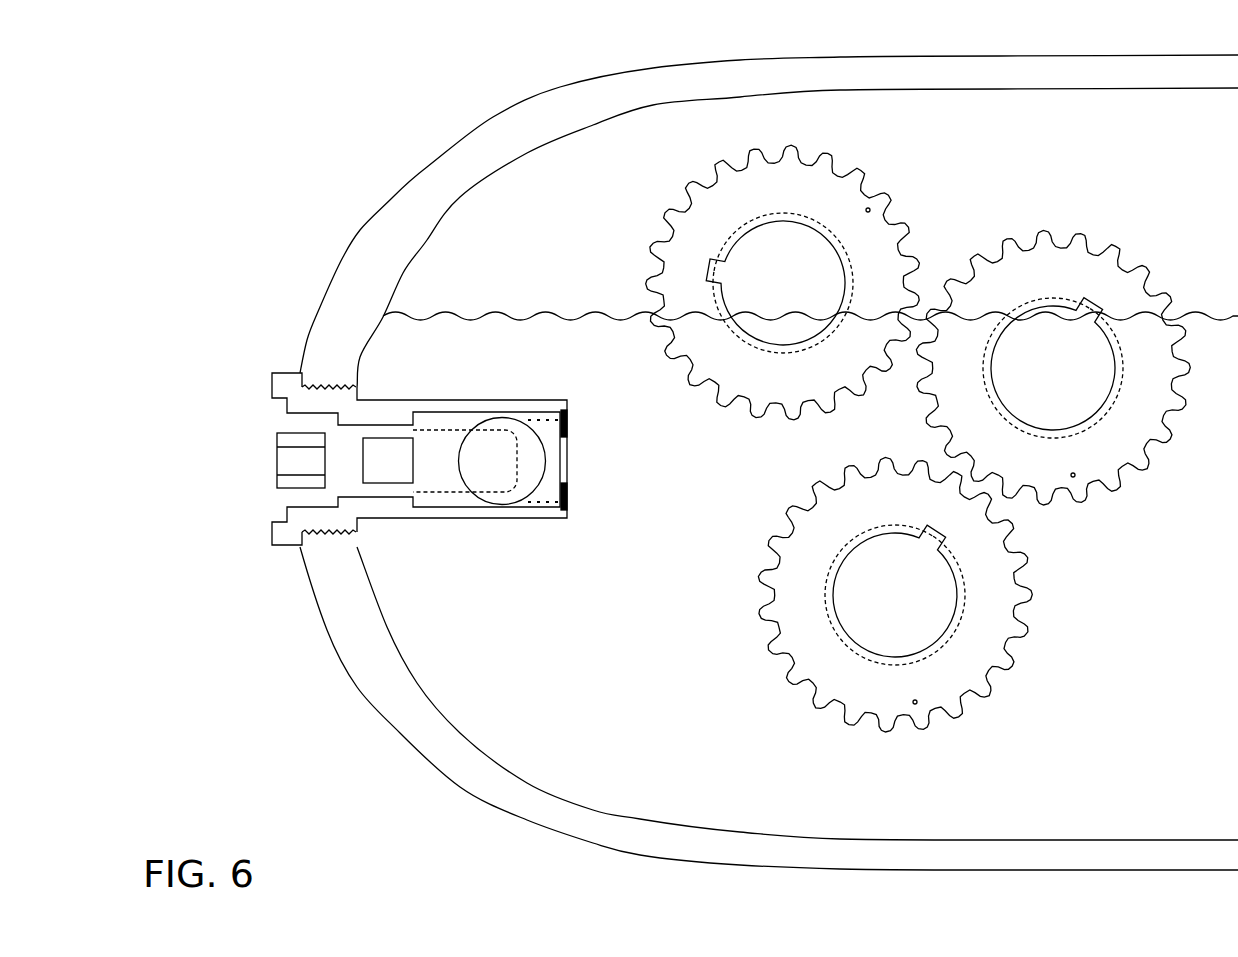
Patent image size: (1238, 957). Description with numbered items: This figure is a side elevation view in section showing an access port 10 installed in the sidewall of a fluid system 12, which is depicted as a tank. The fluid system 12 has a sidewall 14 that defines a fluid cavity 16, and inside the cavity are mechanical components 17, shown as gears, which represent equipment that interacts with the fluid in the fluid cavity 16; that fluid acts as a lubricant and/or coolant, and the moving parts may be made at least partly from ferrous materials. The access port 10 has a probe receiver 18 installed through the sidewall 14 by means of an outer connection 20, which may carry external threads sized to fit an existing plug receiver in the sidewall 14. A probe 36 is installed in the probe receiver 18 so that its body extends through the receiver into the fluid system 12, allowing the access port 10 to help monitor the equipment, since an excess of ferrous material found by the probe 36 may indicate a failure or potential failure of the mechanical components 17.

The access port 10 is at (686, 329).
The fluid system 12 is at (465, 152).
The sidewall 14 is at (373, 257).
The fluid cavity 16 is at (578, 747).
The mechanical components 17 is at (795, 638).
The probe receiver 18 is at (333, 518).
The outer connection 20 is at (342, 385).
The probe 36 is at (285, 467).